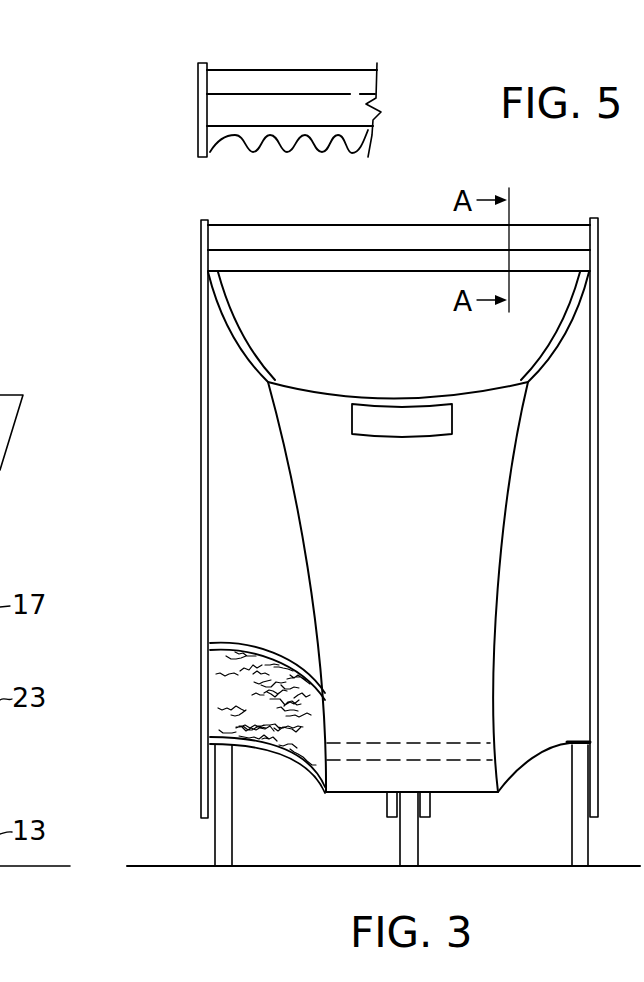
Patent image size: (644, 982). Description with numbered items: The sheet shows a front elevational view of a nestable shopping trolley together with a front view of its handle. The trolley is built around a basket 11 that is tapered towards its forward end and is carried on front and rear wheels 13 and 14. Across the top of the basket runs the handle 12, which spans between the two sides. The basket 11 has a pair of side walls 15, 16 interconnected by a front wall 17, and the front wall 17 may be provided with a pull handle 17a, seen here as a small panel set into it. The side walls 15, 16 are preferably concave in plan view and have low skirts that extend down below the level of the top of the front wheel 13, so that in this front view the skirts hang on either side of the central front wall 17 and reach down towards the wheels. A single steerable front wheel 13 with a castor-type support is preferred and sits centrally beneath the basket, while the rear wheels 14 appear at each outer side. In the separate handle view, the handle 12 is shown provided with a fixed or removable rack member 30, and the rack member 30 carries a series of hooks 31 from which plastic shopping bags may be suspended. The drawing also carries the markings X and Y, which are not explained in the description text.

In FIG. 3, the basket 11 is at (230, 403).
In FIG. 5, the handle 12 is at (237, 80).
In FIG. 3, the handle 12 is at (237, 240).
In FIG. 3, the front wheel 13 is at (408, 826).
In FIG. 3, the rear wheels 14 is at (227, 833).
In FIG. 3, the side wall 15 is at (291, 630).
In FIG. 3, the side wall 16 is at (559, 630).
In FIG. 3, the front wall 17 is at (416, 673).
In FIG. 3, the pull handle 17a is at (392, 425).
In FIG. 5, the rack member 30 is at (381, 128).
In FIG. 5, the hooks 31 is at (253, 152).
In FIG. 3, the filling material region X is at (232, 695).
In FIG. 3, the fill level line Y is at (373, 762).